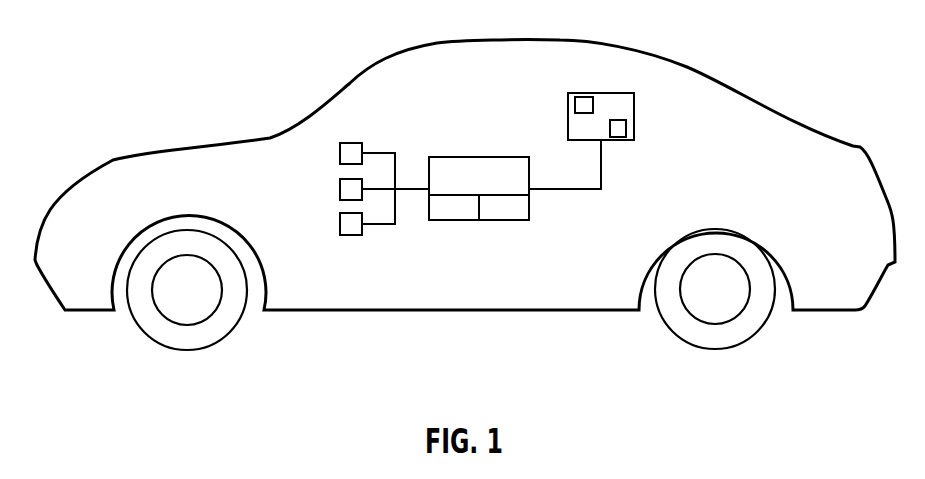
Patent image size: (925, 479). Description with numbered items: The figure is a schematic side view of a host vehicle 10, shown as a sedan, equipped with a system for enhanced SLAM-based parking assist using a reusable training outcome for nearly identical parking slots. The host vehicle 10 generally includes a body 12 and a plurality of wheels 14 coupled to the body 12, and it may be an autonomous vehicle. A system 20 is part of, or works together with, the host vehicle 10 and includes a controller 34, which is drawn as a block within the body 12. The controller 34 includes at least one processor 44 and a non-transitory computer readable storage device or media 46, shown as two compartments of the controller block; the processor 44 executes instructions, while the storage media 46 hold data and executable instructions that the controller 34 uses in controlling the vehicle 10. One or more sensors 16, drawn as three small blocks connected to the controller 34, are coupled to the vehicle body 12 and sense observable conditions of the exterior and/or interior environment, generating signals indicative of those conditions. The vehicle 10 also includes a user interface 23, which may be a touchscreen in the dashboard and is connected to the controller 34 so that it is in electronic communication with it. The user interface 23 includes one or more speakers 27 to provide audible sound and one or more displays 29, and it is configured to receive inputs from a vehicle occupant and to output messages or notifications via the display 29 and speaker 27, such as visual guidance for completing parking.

The host vehicle 10 is at (465, 211).
The body 12 is at (730, 80).
The wheels 14 is at (185, 350).
The sensors 16 is at (340, 224).
The system 20 is at (558, 213).
The user interface 23 is at (620, 142).
The speaker 27 is at (628, 126).
The display 29 is at (575, 103).
The controller 34 is at (478, 156).
The processor 44 is at (450, 210).
The computer readable storage device or media 46 is at (505, 210).